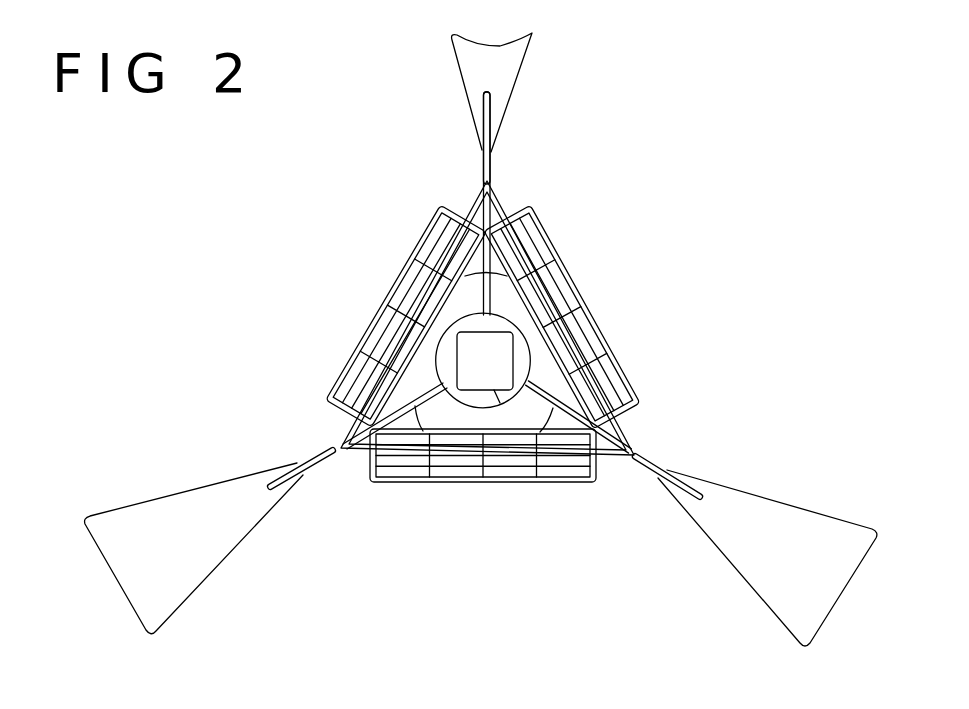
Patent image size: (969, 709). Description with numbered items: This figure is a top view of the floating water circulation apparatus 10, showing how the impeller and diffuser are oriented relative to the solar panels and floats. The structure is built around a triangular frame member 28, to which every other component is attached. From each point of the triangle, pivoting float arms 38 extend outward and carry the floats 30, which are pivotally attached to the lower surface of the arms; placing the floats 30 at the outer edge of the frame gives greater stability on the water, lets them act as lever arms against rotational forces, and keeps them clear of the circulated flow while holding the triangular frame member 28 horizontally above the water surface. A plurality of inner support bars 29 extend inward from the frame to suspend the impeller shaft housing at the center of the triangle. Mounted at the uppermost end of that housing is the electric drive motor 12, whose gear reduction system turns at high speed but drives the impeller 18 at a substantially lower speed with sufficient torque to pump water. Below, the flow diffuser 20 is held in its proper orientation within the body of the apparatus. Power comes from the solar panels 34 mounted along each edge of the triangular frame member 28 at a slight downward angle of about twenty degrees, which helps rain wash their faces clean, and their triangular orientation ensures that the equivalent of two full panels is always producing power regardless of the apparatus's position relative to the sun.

The floating water circulation apparatus 10 is at (300, 243).
The electric drive motor 12 is at (468, 342).
The impeller 18 is at (478, 314).
The flow diffuser 20 is at (425, 365).
The triangular frame member 28 is at (473, 197).
The inner support bars 29 is at (623, 383).
The floats 30 is at (478, 68).
The solar panels 34 is at (388, 295).
The pivoting float arms 38 is at (495, 165).